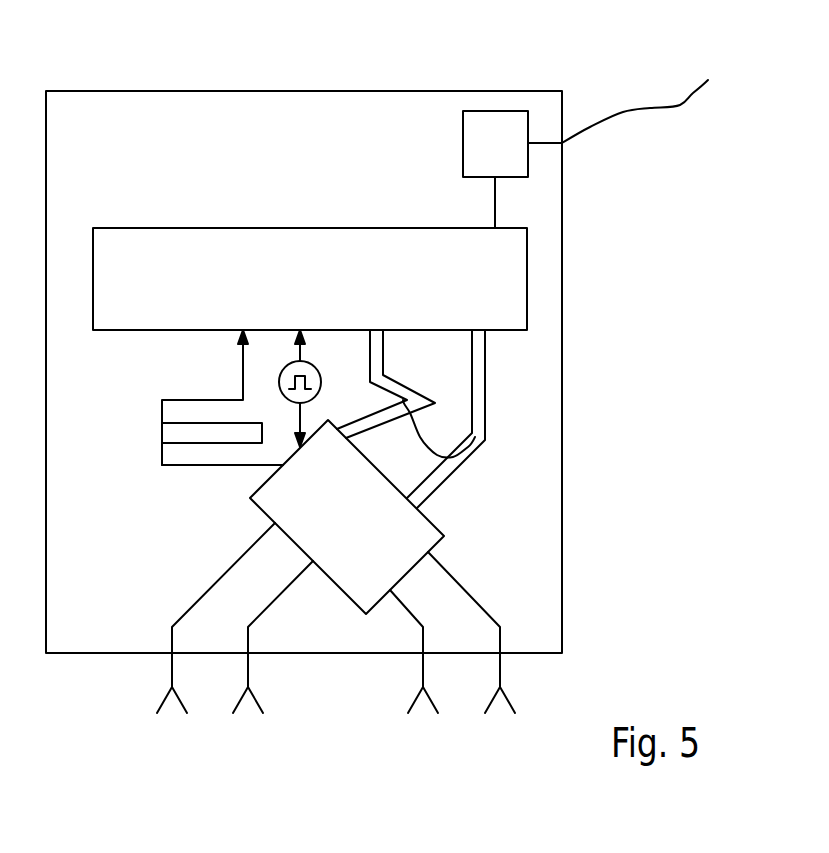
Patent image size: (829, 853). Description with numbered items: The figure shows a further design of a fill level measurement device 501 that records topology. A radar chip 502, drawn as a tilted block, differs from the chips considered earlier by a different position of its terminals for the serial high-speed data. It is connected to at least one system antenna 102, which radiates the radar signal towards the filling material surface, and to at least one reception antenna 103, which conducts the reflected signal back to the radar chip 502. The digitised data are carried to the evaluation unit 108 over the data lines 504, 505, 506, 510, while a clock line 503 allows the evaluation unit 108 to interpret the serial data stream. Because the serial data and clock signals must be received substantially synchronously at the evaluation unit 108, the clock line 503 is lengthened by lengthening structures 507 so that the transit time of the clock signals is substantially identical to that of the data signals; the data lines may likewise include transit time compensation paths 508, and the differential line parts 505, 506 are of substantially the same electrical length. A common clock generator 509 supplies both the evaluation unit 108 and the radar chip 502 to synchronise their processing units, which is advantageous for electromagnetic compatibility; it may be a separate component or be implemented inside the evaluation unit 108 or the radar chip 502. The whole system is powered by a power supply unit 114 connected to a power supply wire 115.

The fill level measurement device 501 is at (125, 91).
The evaluation unit 108 is at (260, 228).
The power supply unit 114 is at (463, 142).
The power supply wire 115 is at (637, 113).
The clock line 503 is at (195, 400).
The lengthening structure 507 is at (182, 467).
The clock generator 509 is at (281, 370).
The radar chip 502 is at (444, 533).
The data line 505 is at (392, 380).
The data line 506 is at (403, 400).
The transit time compensation path 508 is at (455, 461).
The data line 504 is at (485, 430).
The data line 510 is at (485, 442).
The system antenna 102 is at (210, 715).
The reception antenna 103 is at (465, 715).